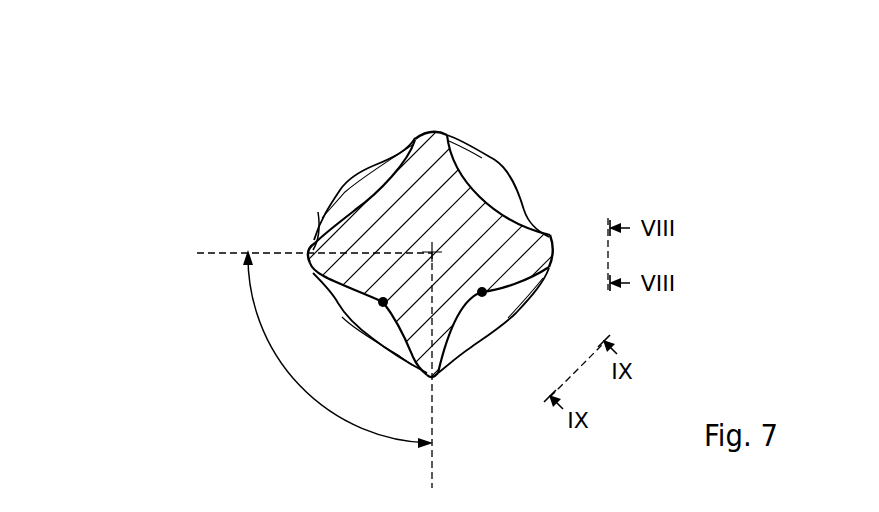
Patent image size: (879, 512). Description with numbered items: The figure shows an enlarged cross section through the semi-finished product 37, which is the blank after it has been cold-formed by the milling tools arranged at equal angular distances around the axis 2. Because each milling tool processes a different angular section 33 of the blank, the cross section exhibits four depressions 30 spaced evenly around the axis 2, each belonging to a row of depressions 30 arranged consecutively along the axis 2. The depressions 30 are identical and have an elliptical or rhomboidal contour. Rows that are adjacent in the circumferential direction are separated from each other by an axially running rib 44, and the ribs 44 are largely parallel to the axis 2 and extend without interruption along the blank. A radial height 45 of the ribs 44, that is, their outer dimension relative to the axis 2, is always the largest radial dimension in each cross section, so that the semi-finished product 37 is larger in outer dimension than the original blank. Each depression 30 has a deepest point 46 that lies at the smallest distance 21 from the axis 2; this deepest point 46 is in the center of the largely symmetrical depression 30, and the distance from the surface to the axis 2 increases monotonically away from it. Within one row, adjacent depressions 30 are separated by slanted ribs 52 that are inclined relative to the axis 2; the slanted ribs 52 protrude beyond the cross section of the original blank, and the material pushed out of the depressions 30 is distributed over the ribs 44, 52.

The semi-finished product 37 is at (138, 66).
The axis 2 is at (432, 252).
The smallest distance 21 is at (434, 254).
The depression 30 is at (372, 172).
The angular section 33 is at (257, 315).
The axially running rib 44 is at (430, 131).
The radial height 45 is at (318, 212).
The deepest point 46 is at (383, 302).
The slanted rib 52 is at (342, 183).